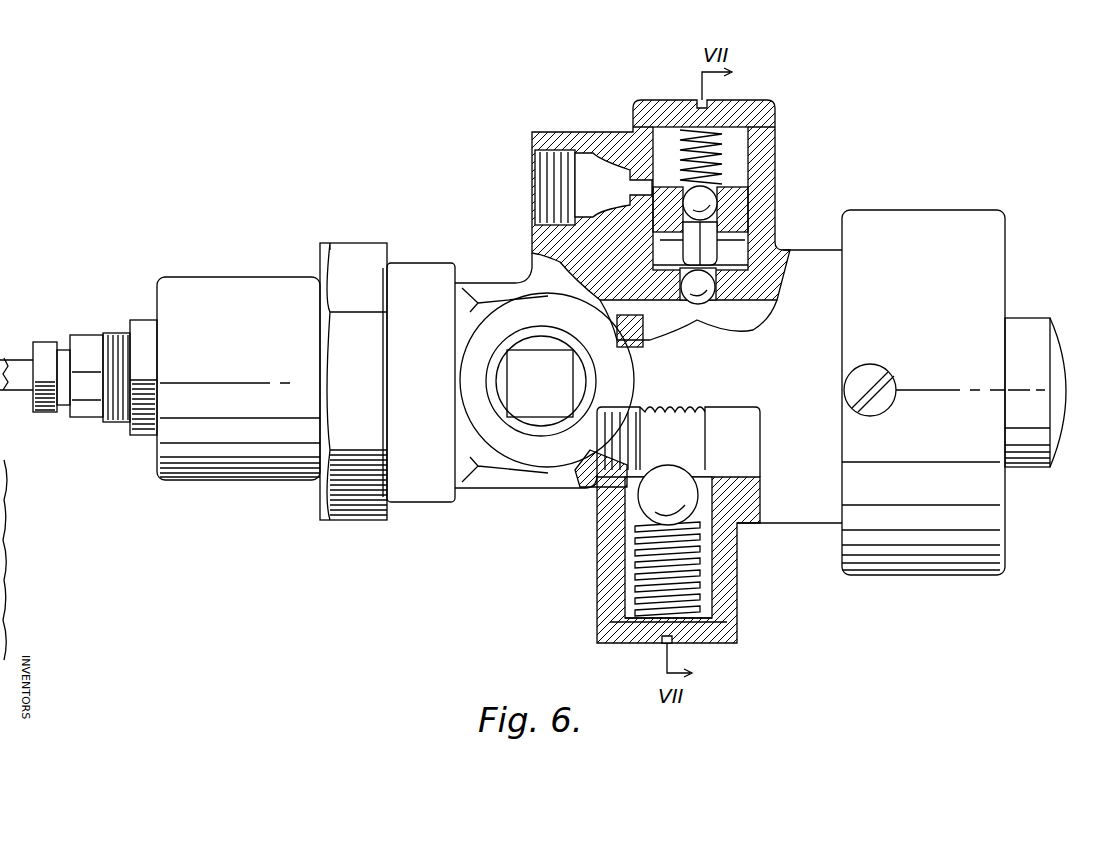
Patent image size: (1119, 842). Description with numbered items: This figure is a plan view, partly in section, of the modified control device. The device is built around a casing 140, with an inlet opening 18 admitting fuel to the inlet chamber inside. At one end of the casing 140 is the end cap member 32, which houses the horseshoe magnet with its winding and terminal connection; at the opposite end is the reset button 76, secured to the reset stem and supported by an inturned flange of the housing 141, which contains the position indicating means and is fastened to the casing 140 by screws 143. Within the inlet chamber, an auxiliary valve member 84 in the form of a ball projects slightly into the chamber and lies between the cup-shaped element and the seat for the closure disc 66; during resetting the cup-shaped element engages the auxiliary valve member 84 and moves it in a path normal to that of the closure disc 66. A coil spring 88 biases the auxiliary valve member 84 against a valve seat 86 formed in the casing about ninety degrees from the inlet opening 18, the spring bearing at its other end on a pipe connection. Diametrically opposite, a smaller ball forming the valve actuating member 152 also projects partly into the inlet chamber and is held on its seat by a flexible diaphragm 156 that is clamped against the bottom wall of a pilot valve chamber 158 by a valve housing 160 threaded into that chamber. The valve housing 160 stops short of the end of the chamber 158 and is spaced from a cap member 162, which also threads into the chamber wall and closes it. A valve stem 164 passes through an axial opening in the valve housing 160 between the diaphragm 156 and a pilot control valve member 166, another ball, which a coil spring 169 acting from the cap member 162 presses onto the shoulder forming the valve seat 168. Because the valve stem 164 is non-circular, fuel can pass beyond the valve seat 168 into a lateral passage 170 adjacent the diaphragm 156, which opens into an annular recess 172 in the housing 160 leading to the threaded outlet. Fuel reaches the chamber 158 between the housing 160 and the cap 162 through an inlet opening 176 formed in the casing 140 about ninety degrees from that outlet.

The end cap member 32 is at (250, 283).
The casing 140 is at (420, 272).
The annular recess 172 is at (526, 370).
The inlet opening 176 is at (543, 182).
The valve seat 168 is at (650, 200).
The coil spring 169 is at (723, 157).
The cap member 162 is at (773, 116).
The pilot valve chamber 158 is at (740, 170).
The pilot control valve member 166 is at (704, 205).
The valve housing 160 is at (735, 215).
The valve stem 164 is at (707, 235).
The lateral passage 170 is at (730, 256).
The flexible diaphragm 156 is at (722, 276).
The valve actuating member 152 is at (700, 292).
The housing 141 is at (935, 220).
The screws 143 is at (868, 372).
The reset button 76 is at (1028, 325).
The inlet opening 18 is at (533, 428).
The closure disc 66 is at (620, 462).
The valve seat 86 is at (615, 500).
The auxiliary valve member 84 is at (668, 478).
The coil spring 88 is at (712, 560).